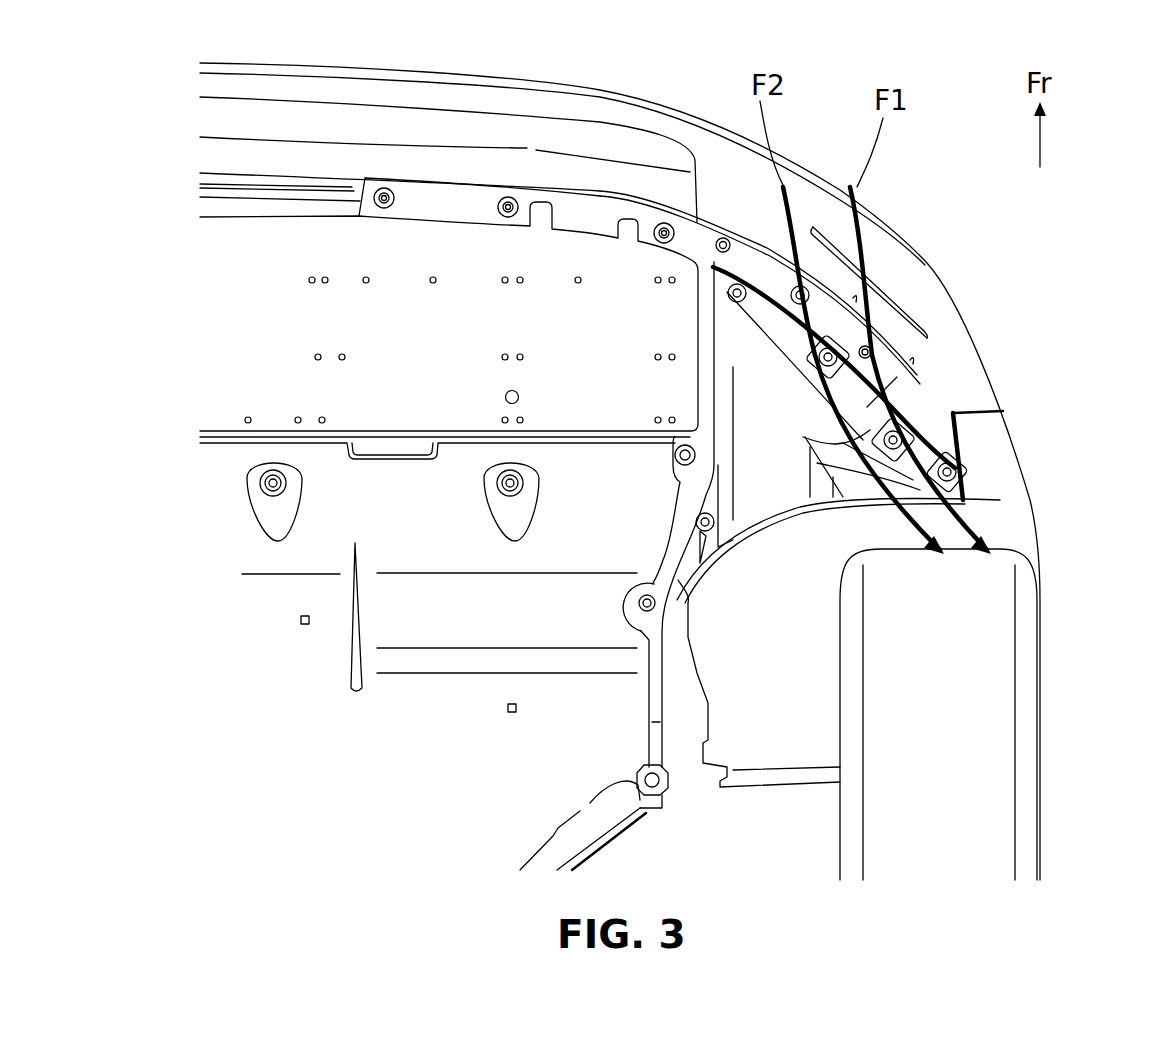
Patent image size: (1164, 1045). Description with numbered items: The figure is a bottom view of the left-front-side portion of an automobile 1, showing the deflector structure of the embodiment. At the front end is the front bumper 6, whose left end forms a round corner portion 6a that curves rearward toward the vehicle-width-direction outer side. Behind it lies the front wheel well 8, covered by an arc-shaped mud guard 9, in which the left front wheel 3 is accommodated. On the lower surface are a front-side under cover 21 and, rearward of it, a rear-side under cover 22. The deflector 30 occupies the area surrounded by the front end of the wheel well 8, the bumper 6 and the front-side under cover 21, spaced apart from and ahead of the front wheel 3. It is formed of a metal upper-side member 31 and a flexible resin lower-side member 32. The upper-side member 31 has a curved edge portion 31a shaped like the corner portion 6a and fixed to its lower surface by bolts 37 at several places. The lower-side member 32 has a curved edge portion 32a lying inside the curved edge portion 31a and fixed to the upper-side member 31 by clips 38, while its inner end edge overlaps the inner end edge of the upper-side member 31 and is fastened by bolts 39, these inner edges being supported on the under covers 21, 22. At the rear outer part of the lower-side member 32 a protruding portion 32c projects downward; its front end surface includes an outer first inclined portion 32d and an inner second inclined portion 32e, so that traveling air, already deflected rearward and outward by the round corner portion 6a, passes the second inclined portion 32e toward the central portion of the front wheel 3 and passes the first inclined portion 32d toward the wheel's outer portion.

The automobile 1 is at (534, 83).
The front wheel 3 is at (990, 842).
The front bumper 6 is at (620, 147).
The corner portion 6a is at (877, 243).
The front wheel well 8 is at (768, 675).
The mud guard 9 is at (796, 723).
The front-side under cover 21 is at (245, 320).
The rear-side under cover 22 is at (245, 548).
The deflector 30 is at (1093, 290).
The upper-side member 31 is at (921, 382).
The curved edge portion 31a is at (937, 300).
The lower-side member 32 is at (904, 416).
The curved edge portion 32a is at (930, 323).
The protruding portion 32c is at (860, 493).
The first inclined portion 32d is at (955, 470).
The second inclined portion 32e is at (840, 463).
The bolt 37 is at (800, 286).
The clip 38 is at (830, 347).
The bolt 39 is at (708, 531).